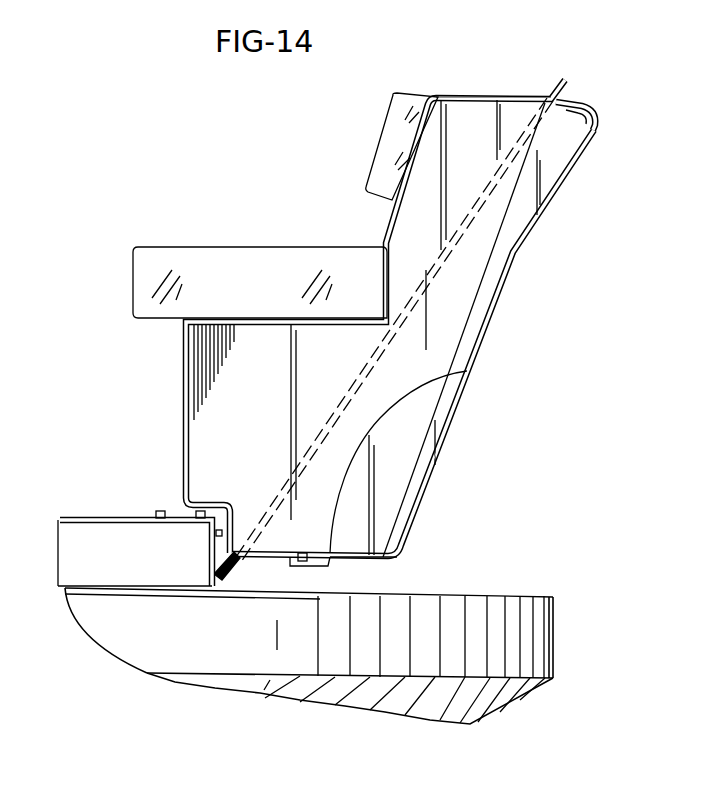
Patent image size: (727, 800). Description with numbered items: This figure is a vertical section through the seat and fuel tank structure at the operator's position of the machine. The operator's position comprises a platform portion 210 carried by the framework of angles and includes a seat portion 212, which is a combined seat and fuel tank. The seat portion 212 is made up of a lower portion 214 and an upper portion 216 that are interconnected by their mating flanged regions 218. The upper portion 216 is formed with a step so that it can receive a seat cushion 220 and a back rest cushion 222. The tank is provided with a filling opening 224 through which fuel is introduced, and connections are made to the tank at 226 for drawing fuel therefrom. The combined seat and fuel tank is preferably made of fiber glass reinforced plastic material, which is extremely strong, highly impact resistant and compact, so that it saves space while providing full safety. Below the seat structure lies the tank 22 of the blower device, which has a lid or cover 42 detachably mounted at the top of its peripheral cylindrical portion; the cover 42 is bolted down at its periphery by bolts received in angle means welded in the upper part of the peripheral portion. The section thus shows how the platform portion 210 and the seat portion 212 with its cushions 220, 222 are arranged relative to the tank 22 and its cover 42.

The tank 22 is at (555, 634).
The lid or cover 42 is at (550, 595).
The platform portion 210 is at (115, 505).
The seat portion 212 is at (499, 328).
The lower portion 214 is at (562, 195).
The upper portion 216 is at (493, 95).
The mating flanged regions 218 is at (564, 79).
The seat cushion 220 is at (268, 247).
The back rest cushion 222 is at (385, 148).
The filling opening 224 is at (588, 117).
The connections 226 is at (312, 568).